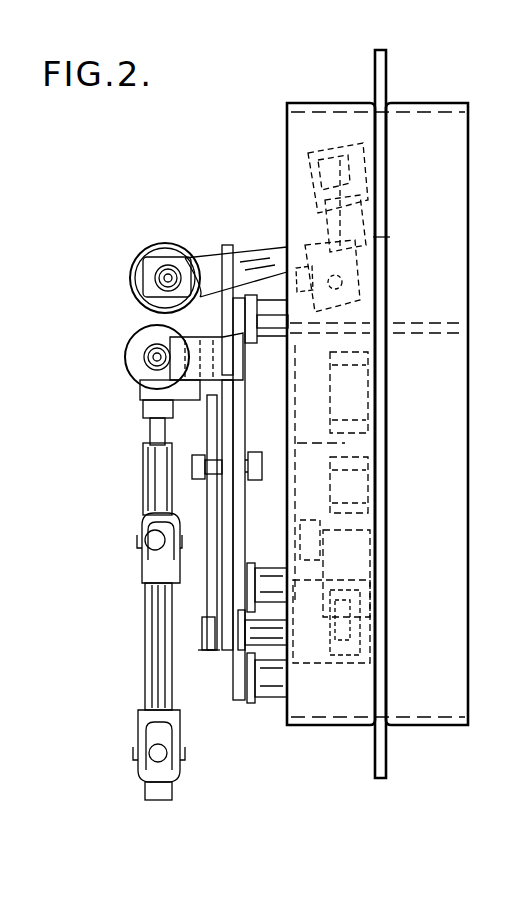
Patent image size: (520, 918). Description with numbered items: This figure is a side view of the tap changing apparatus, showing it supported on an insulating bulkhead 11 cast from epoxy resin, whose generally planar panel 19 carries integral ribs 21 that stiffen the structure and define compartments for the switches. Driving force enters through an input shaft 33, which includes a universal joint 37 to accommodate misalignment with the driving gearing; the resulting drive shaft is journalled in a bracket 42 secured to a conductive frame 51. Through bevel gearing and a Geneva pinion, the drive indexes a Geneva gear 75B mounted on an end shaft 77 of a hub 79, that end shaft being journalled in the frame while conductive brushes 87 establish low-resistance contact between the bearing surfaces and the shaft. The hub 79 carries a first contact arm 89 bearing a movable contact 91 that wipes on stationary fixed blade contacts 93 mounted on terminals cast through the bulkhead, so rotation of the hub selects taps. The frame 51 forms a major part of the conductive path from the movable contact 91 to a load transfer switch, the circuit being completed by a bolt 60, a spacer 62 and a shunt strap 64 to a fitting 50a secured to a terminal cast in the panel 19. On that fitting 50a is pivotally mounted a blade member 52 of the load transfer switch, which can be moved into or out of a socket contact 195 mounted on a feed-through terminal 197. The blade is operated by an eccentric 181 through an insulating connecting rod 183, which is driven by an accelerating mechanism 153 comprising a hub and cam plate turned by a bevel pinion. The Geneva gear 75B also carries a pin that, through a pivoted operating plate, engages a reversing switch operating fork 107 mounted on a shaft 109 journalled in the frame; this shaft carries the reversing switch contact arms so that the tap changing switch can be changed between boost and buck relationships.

The insulating bulkhead 11 is at (404, 82).
The bulkhead panel 19 is at (375, 766).
The integral ribs 21 is at (428, 318).
The input shaft 33 is at (150, 632).
The universal joint 37 is at (185, 757).
The bracket 42 is at (222, 366).
The fitting 50a is at (380, 333).
The frame 51 is at (238, 523).
The blade member 52 is at (398, 238).
The bolt 60 is at (220, 282).
The spacer 62 is at (266, 308).
The shunt strap 64 is at (312, 297).
The Geneva gear 75B is at (207, 412).
The end shaft 77 is at (260, 452).
The hub 79 is at (264, 403).
The conductive brushes 87 is at (287, 510).
The first contact arm 89 is at (290, 554).
The movable contact 91 is at (331, 591).
The fixed blade contacts 93 is at (330, 392).
The reversing switch operating fork 107 is at (207, 604).
The shaft 109 is at (200, 648).
The accelerating mechanism 153 is at (153, 232).
The eccentric 181 is at (180, 263).
The insulating connecting rod 183 is at (253, 250).
The socket contact 195 is at (316, 150).
The feed-through terminal 197 is at (388, 186).